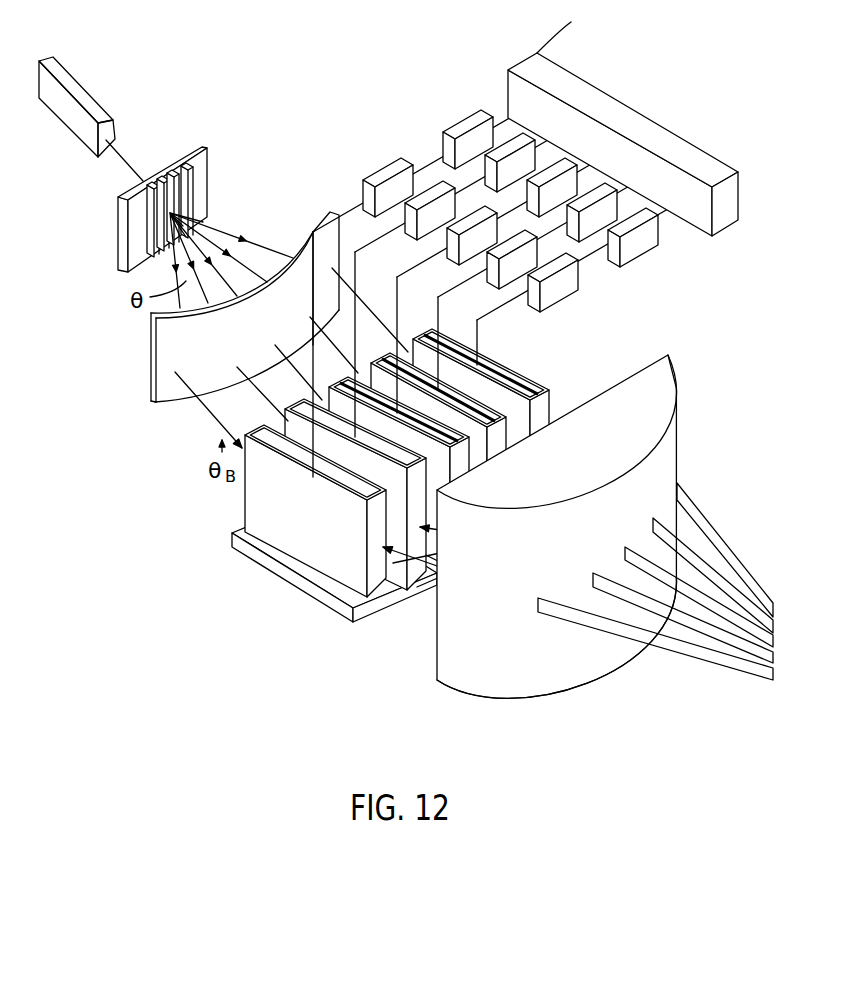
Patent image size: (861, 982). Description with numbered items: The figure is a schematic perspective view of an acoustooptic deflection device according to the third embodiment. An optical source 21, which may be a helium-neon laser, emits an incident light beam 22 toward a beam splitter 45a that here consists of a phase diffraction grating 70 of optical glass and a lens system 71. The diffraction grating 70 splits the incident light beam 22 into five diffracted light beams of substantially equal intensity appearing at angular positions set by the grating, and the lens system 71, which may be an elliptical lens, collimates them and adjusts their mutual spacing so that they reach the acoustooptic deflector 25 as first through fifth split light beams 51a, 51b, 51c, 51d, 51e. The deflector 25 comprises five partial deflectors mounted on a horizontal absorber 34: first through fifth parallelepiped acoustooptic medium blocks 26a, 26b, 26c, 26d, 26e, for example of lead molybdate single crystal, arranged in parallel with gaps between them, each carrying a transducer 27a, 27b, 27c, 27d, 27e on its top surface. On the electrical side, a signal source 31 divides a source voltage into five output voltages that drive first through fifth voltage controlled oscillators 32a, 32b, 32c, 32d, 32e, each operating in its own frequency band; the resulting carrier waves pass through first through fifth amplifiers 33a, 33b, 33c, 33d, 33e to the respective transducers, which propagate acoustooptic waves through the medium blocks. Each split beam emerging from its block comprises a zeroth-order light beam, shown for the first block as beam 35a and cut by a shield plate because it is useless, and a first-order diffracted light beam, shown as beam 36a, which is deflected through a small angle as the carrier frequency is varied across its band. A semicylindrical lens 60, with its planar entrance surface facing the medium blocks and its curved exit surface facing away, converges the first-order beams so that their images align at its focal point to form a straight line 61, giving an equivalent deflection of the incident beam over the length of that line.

The optical source 21 is at (86, 92).
The incident light beam 22 is at (122, 165).
The phase diffraction grating 70 is at (122, 230).
The lens system 71 is at (151, 390).
The beam splitter 45a is at (130, 337).
The first split light beam 51a is at (208, 442).
The second split light beam 51b is at (271, 406).
The third split light beam 51c is at (308, 380).
The fourth split light beam 51d is at (354, 356).
The fifth split light beam 51e is at (398, 336).
The first acoustooptic medium block 26a is at (258, 525).
The second acoustooptic medium block 26b is at (347, 470).
The third acoustooptic medium block 26c is at (372, 523).
The fourth acoustooptic medium block 26d is at (490, 374).
The fifth acoustooptic medium block 26e is at (550, 391).
The first transducer 27a is at (250, 444).
The second transducer 27b is at (352, 433).
The third transducer 27c is at (388, 465).
The fourth transducer 27d is at (450, 397).
The fifth transducer 27e is at (523, 388).
The absorber 34 is at (352, 622).
The zeroth-order light beam 35a is at (430, 590).
The first-order diffracted light beam 36a is at (407, 598).
The acoustooptic deflector 25 is at (265, 663).
The semicylindrical lens 60 is at (537, 693).
The straight line 61 is at (773, 685).
The signal source 31 is at (637, 117).
The first voltage controlled oscillator 32a is at (458, 128).
The second voltage controlled oscillator 32b is at (507, 147).
The third voltage controlled oscillator 32c is at (560, 167).
The fourth voltage controlled oscillator 32d is at (622, 213).
The fifth voltage controlled oscillator 32e is at (624, 232).
The first amplifier 33a is at (378, 175).
The second amplifier 33b is at (433, 190).
The third amplifier 33c is at (473, 216).
The fourth amplifier 33d is at (535, 242).
The fifth amplifier 33e is at (548, 275).